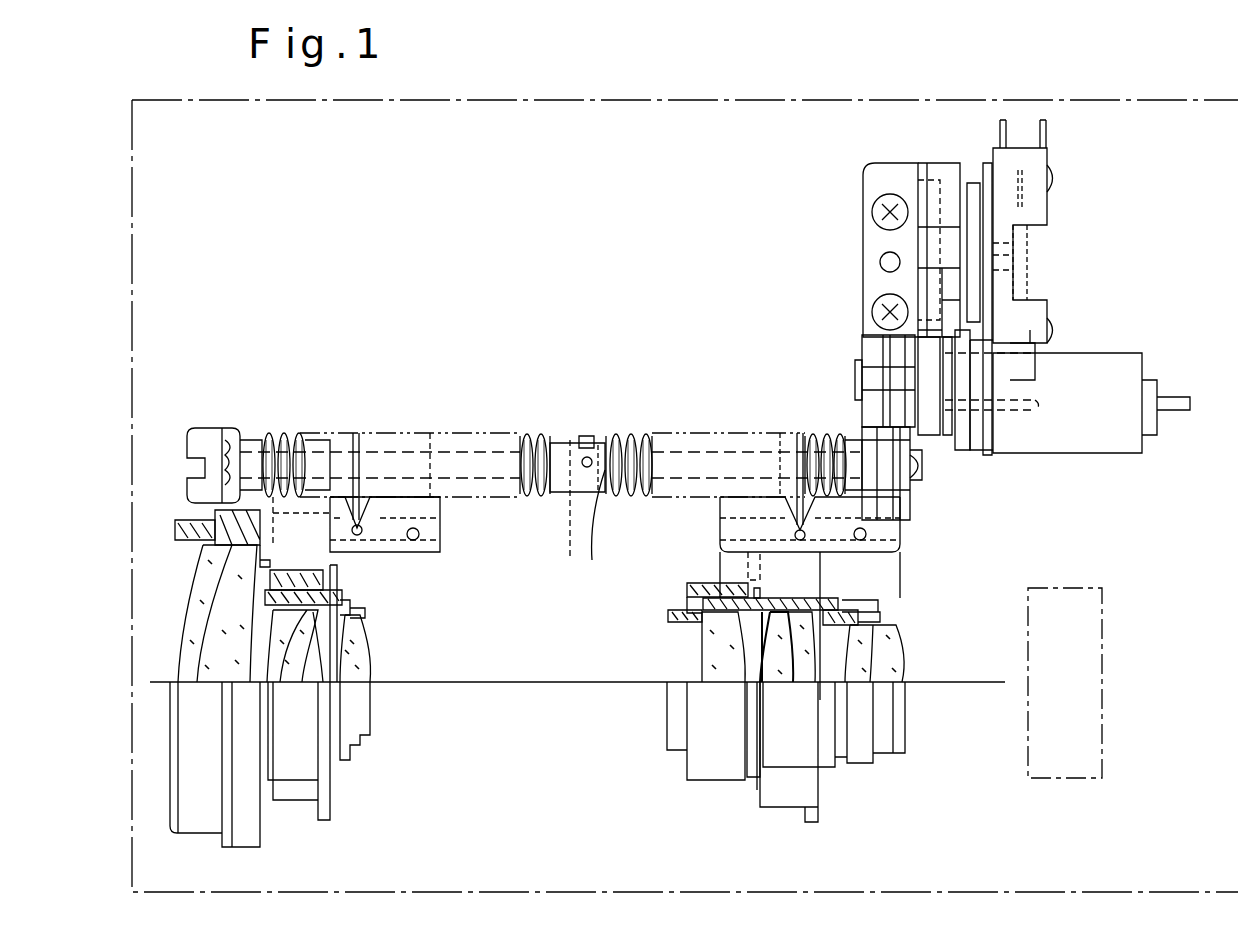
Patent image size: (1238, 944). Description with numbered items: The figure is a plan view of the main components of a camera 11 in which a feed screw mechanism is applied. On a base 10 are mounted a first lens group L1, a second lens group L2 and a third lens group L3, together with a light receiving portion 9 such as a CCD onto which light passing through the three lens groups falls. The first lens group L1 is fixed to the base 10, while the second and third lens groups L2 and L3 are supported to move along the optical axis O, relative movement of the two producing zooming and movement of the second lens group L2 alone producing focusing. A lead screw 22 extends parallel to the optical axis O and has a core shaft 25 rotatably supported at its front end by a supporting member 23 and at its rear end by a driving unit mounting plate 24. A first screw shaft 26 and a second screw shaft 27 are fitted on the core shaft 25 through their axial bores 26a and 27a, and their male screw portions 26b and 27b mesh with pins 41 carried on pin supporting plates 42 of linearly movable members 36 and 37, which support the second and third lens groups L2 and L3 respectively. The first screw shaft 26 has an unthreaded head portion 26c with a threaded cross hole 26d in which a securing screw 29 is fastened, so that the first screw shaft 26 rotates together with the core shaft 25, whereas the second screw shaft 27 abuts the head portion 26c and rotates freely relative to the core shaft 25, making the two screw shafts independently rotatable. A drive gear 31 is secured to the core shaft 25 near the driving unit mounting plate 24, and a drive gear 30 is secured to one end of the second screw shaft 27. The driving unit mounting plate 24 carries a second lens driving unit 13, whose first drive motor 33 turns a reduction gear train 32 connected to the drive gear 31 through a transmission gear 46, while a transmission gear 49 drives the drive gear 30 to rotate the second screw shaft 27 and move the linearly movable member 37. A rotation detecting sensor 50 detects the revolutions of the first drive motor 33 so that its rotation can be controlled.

The light receiving portion 9 is at (1085, 610).
The base 10 is at (486, 128).
The camera 11 is at (1129, 142).
The second lens driving unit 13 is at (904, 108).
The lead screw 22 is at (617, 376).
The supporting member 23 is at (200, 430).
The driving unit mounting plate 24 is at (925, 165).
The core shaft 25 is at (577, 503).
The first screw shaft 26 is at (393, 436).
The axial bore 26a is at (428, 448).
The male screw portion 26b is at (525, 440).
The head portion 26c is at (600, 470).
The threaded cross hole 26d is at (598, 442).
The second screw shaft 27 is at (732, 438).
The axial bore 27a is at (778, 448).
The male screw portion 27b is at (640, 440).
The securing screw 29 is at (584, 436).
The drive gear 30 is at (868, 522).
The drive gear 31 is at (895, 505).
The reduction gear train 32 is at (948, 161).
The first drive motor 33 is at (1100, 456).
The linearly movable member 36 is at (460, 551).
The linearly movable member 37 is at (712, 543).
The pin 41 is at (355, 538).
The pin supporting plate 42 is at (435, 514).
The transmission gear 46 is at (900, 333).
The transmission gear 49 is at (864, 345).
The rotation detecting sensor 50 is at (1067, 249).
The optical axis O is at (563, 684).
The first lens group L1 is at (151, 818).
The second lens group L2 is at (341, 819).
The third lens group L3 is at (735, 803).